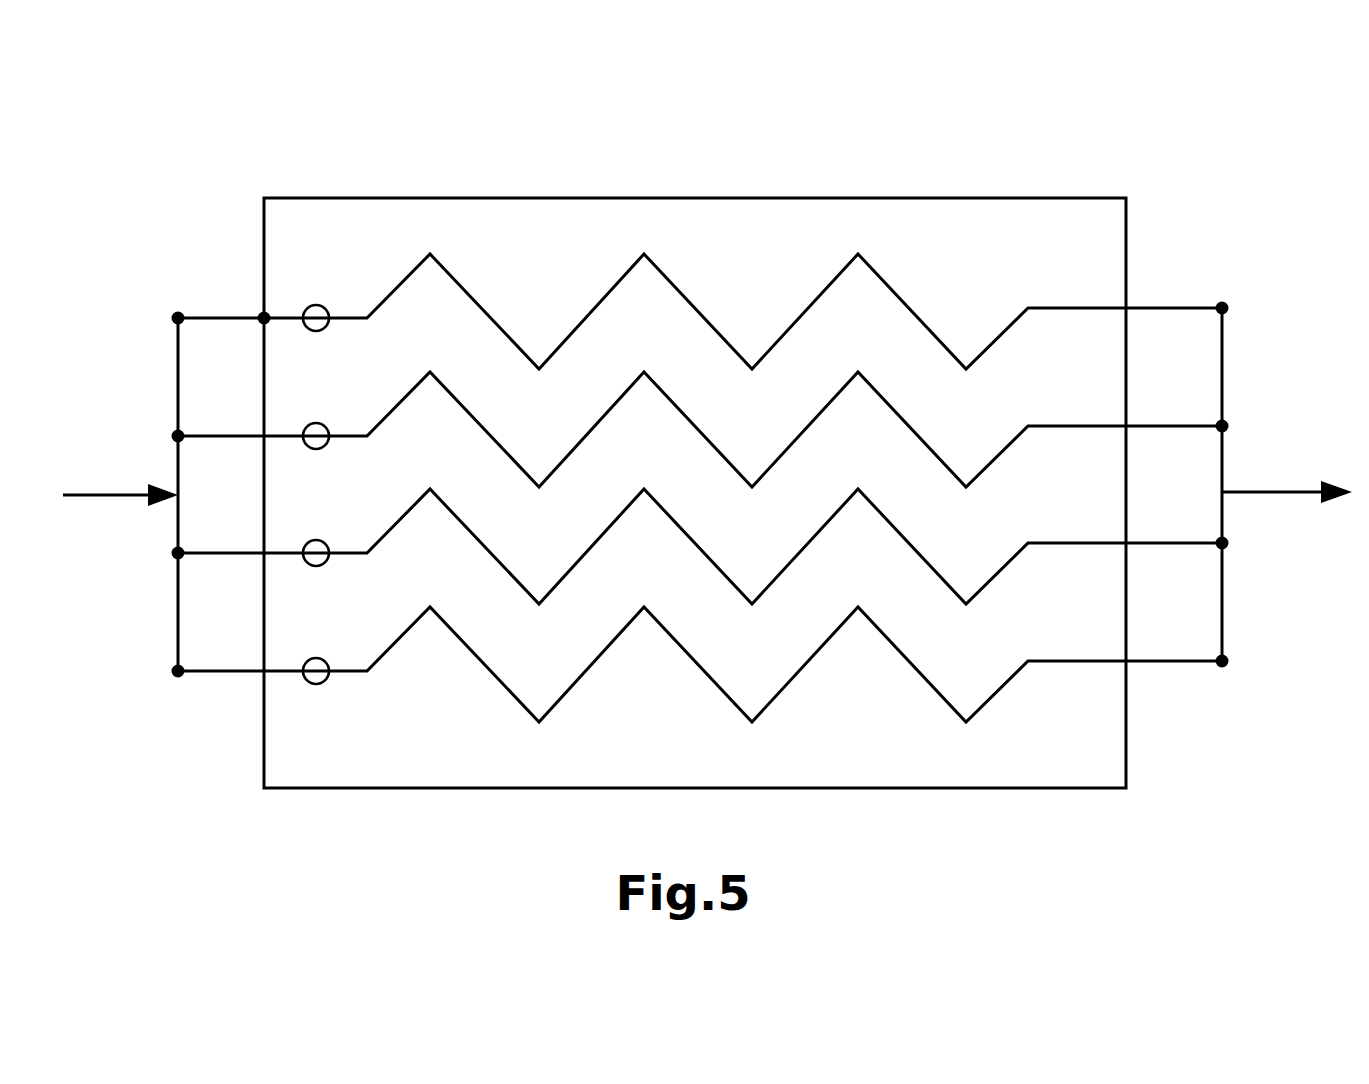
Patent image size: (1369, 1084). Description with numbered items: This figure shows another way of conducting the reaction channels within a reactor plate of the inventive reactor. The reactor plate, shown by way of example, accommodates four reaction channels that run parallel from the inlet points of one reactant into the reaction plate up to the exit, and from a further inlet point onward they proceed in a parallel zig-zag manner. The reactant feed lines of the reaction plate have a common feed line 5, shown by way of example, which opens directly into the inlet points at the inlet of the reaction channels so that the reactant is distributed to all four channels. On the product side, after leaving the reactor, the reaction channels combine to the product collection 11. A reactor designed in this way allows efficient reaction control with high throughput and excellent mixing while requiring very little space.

The feed line 5 is at (95, 493).
The product collection 11 is at (1282, 492).